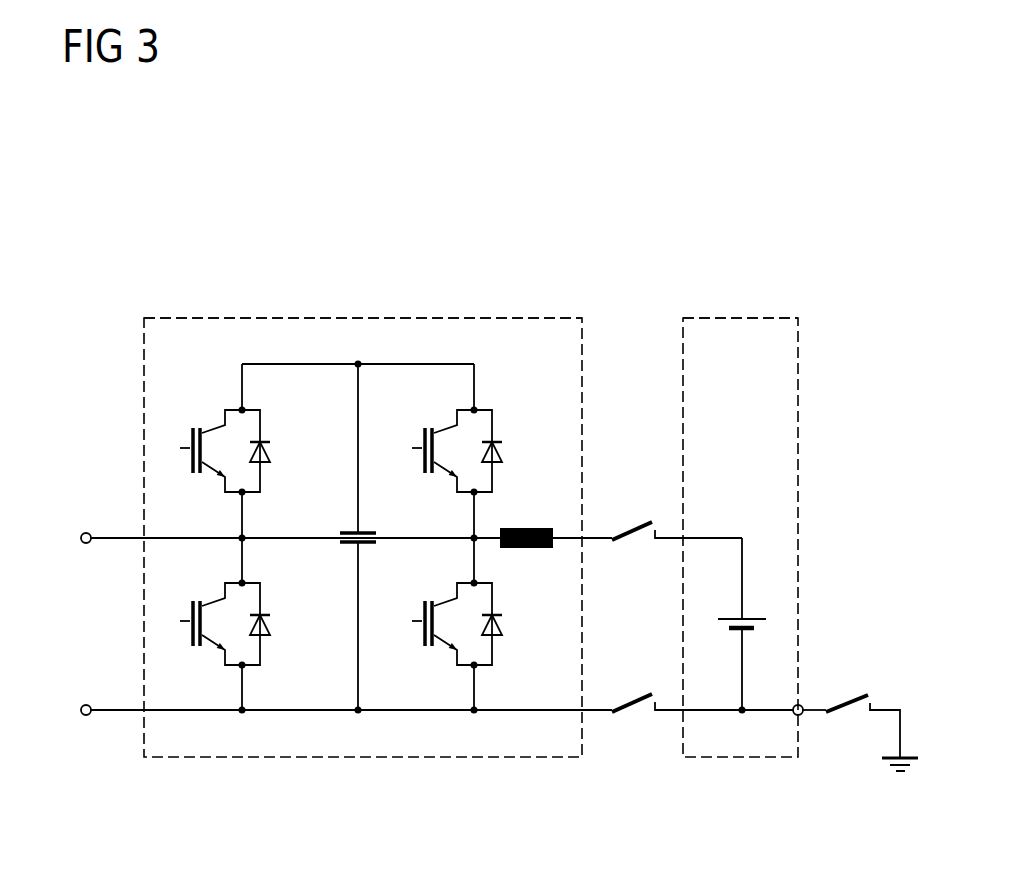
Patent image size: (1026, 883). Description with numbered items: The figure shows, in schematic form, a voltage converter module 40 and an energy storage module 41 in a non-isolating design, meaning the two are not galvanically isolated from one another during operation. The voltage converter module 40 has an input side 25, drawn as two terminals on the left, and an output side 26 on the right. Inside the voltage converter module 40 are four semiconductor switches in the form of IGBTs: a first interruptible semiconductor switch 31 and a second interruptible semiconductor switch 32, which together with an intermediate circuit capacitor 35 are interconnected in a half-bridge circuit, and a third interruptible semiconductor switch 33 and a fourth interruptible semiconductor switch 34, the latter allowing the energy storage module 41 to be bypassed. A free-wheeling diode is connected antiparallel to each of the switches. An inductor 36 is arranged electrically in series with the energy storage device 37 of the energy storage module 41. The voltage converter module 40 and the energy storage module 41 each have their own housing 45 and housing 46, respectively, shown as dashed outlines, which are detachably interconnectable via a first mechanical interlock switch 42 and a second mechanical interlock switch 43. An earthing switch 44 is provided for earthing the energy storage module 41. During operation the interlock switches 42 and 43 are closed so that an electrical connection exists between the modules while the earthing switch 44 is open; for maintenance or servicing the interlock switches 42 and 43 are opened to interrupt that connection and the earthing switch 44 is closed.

The input side 25 is at (100, 628).
The output side 26 is at (634, 782).
The first interruptible semiconductor switch 31 is at (229, 435).
The second interruptible semiconductor switch 32 is at (229, 644).
The third interruptible semiconductor switch 33 is at (461, 435).
The fourth interruptible semiconductor switch 34 is at (461, 644).
The intermediate circuit capacitor 35 is at (338, 538).
The inductor 36 is at (536, 526).
The energy storage device 37 is at (766, 626).
The voltage converter module 40 is at (298, 280).
The energy storage module 41 is at (720, 280).
The first mechanical interlock switch 42 is at (630, 530).
The second mechanical interlock switch 43 is at (630, 704).
The earthing switch 44 is at (848, 702).
The housing 45 is at (418, 318).
The housing 46 is at (764, 318).